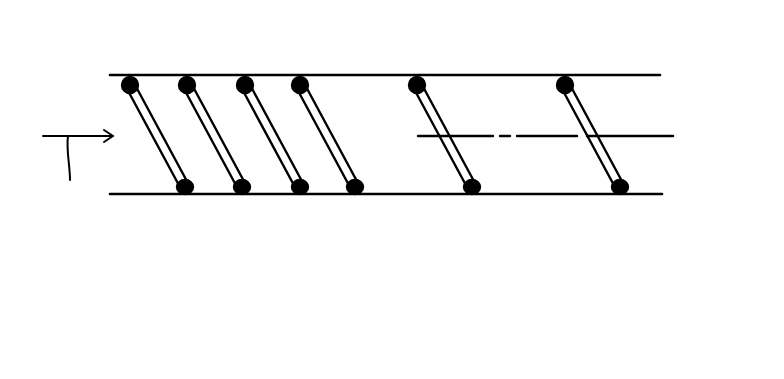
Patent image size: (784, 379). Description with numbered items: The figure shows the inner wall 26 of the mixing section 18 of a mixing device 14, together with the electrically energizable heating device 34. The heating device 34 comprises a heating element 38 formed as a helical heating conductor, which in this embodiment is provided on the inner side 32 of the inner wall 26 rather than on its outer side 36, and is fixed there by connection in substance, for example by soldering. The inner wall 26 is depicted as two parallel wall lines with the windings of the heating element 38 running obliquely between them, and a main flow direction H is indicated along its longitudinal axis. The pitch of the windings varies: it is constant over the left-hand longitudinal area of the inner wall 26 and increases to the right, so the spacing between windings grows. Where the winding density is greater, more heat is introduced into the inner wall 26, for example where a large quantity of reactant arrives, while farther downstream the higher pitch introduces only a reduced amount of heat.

The mixing device 14 is at (498, 62).
The inner wall 26 is at (632, 75).
The inner side 32 is at (505, 194).
The electrically energizable heating device 34 is at (242, 176).
The heating element 38 is at (262, 98).
The outer side 36 is at (640, 195).
The mixing section 18 is at (588, 260).